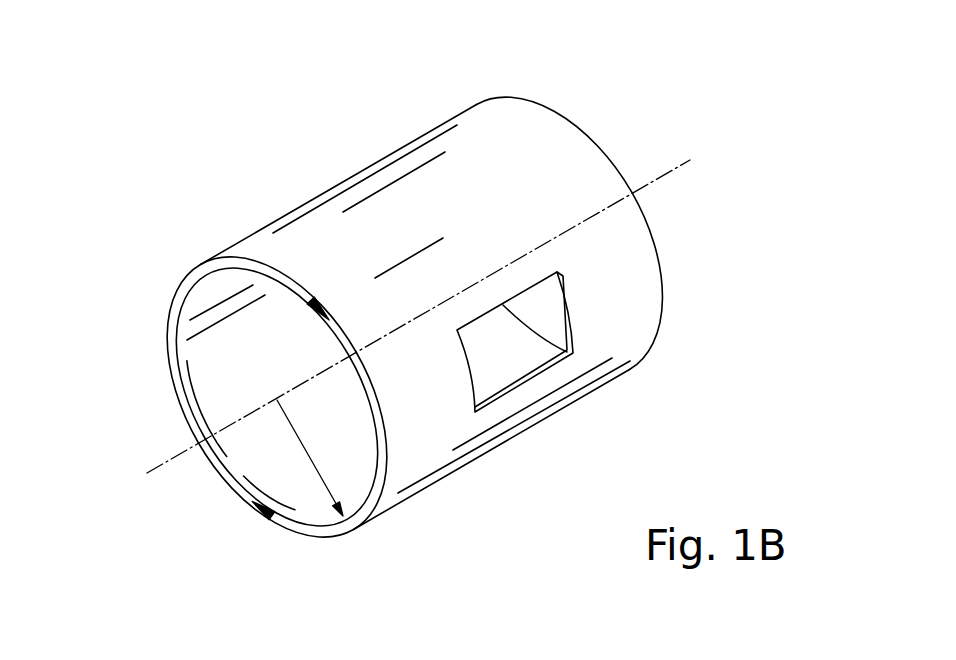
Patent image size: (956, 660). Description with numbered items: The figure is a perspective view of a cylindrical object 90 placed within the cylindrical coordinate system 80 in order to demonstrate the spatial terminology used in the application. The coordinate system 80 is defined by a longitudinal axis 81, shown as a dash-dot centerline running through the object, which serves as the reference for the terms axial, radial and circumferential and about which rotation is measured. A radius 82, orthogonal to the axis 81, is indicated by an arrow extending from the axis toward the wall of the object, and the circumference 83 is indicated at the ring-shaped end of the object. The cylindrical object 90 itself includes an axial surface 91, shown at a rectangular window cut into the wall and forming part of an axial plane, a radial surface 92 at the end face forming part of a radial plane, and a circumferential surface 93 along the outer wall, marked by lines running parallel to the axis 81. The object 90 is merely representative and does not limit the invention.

The cylindrical coordinate system 80 is at (597, 117).
The longitudinal axis 81 is at (157, 468).
The radius 82 is at (320, 462).
The circumference 83 is at (177, 293).
The cylindrical object 90 is at (458, 102).
The axial surface 91 is at (544, 368).
The radial surface 92 is at (292, 525).
The circumferential surface 93 is at (391, 205).